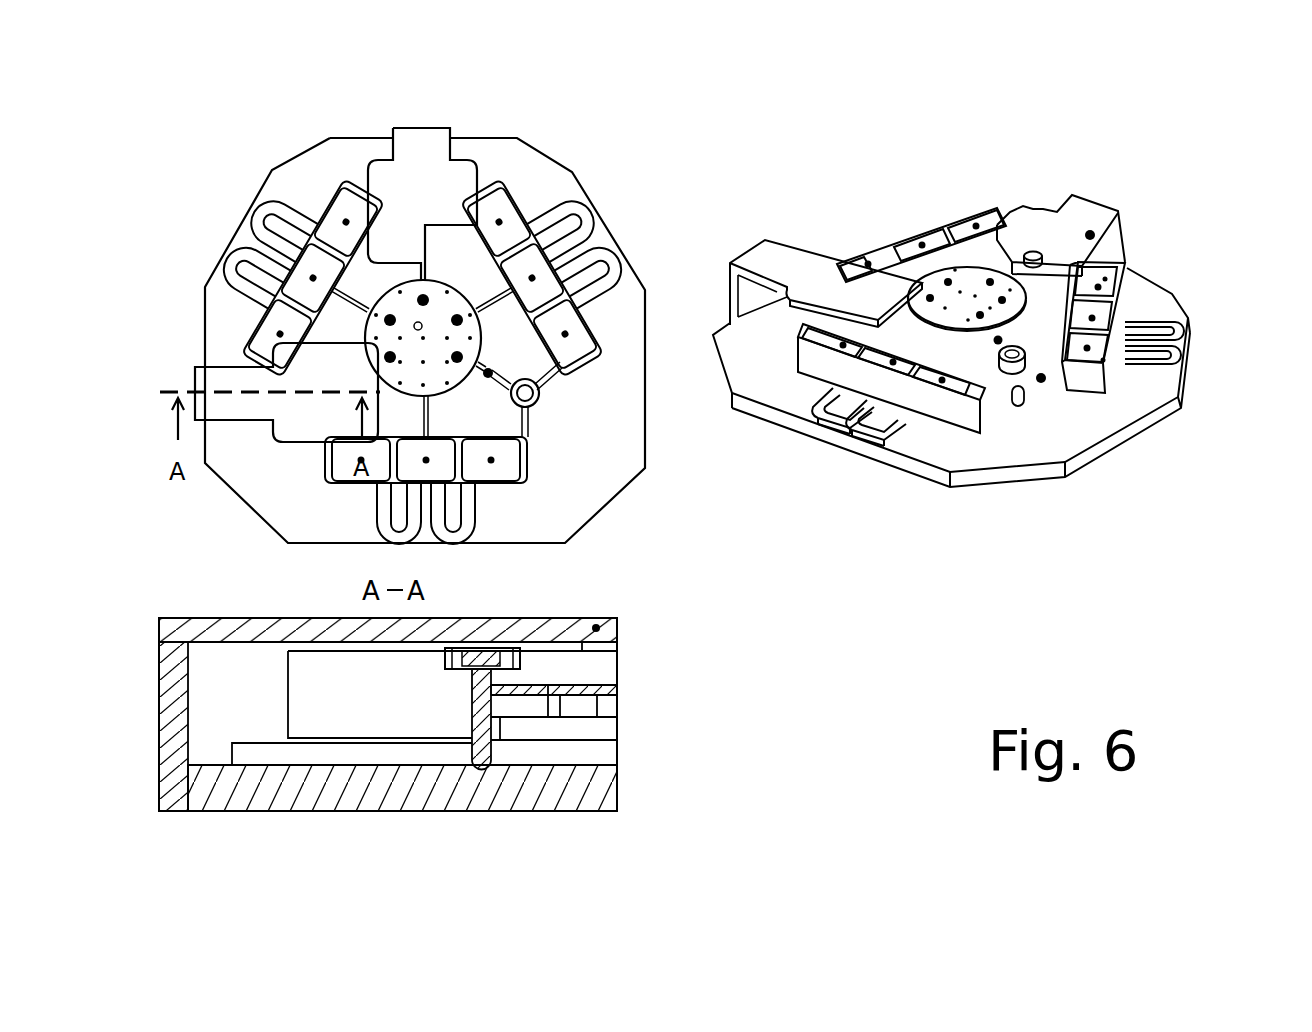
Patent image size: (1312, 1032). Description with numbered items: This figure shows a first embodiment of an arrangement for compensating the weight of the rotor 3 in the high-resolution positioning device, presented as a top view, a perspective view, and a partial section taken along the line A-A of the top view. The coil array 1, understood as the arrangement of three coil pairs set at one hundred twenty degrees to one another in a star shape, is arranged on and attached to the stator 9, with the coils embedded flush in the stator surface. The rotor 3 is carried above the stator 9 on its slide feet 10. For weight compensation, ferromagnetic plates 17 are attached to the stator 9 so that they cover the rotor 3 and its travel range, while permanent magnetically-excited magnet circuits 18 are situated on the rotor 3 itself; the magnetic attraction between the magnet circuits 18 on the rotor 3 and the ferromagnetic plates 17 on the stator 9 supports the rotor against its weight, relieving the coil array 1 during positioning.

The coil array 1 is at (600, 215).
The rotor 3 is at (532, 424).
The stator 9 is at (590, 488).
The slide feet 10 is at (1018, 402).
The ferromagnetic plates 17 is at (410, 148).
The magnet circuits 18 is at (527, 661).